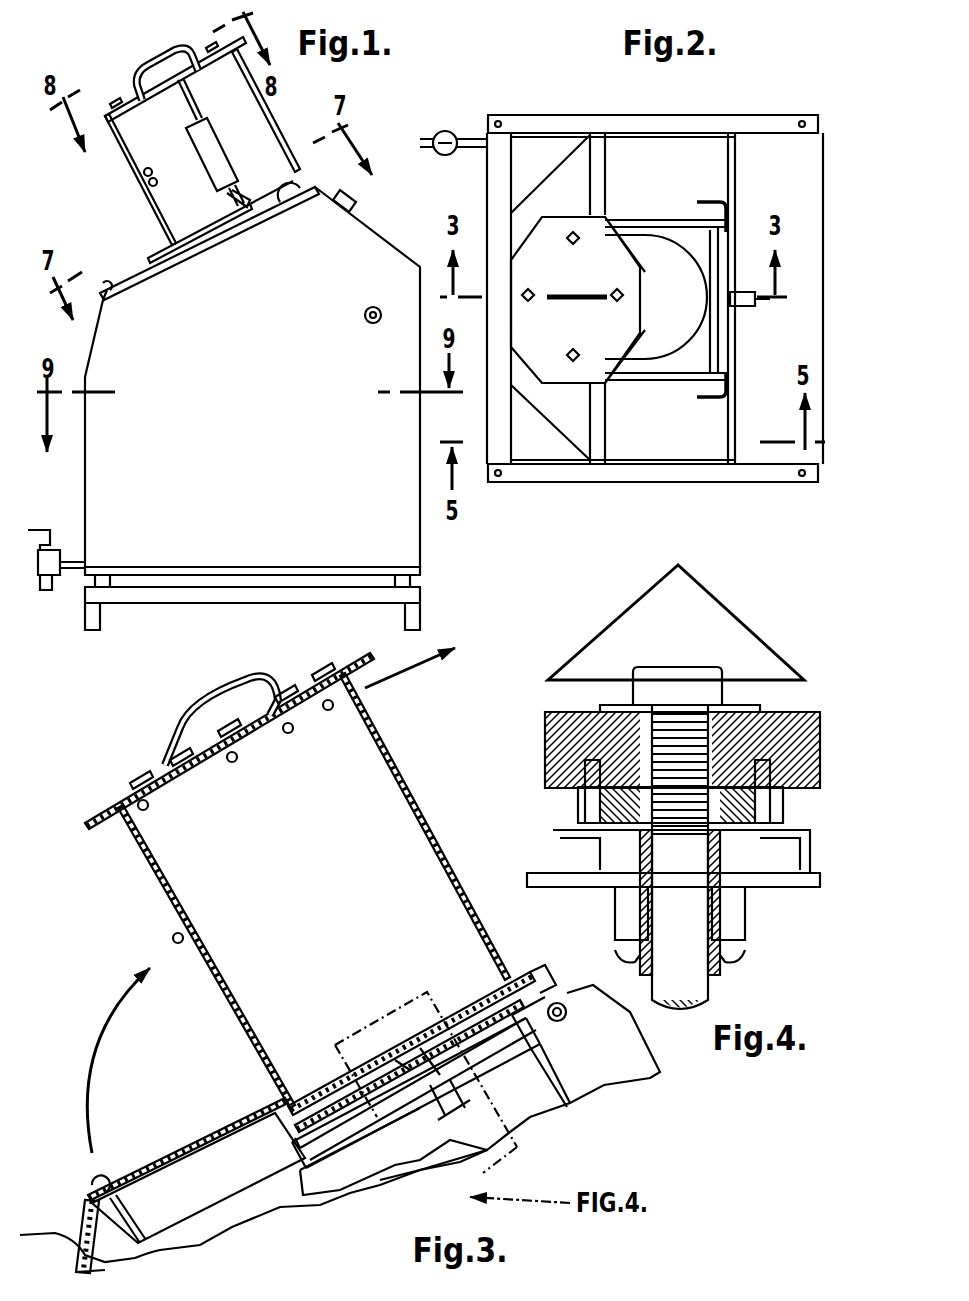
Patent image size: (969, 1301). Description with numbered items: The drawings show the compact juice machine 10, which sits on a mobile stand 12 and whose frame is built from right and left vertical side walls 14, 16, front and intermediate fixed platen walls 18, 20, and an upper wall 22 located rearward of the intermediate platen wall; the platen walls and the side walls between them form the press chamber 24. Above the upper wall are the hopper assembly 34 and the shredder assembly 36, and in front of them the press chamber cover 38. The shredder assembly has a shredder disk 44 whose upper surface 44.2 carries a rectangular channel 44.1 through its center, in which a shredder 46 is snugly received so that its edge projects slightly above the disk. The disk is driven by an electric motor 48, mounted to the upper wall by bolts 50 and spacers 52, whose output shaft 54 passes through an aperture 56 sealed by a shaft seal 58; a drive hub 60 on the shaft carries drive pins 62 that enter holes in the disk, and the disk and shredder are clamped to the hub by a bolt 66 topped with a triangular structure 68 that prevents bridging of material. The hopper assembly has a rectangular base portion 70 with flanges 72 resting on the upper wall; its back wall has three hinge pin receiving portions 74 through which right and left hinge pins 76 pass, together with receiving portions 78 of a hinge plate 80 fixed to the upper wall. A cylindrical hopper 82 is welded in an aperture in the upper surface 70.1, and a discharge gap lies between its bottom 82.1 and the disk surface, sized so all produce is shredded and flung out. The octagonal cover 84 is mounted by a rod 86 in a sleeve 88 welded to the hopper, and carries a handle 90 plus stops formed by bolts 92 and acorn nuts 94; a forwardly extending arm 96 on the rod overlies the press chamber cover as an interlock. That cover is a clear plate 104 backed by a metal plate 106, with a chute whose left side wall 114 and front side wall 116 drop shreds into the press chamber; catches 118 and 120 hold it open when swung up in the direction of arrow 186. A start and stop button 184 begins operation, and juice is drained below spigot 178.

In FIG. 1, the compact juice machine 10 is at (435, 537).
In FIG. 2, the compact juice machine 10 is at (780, 100).
In FIG. 1, the mobile stand 12 is at (433, 592).
In FIG. 1, the right vertical side wall 14 is at (253, 407).
In FIG. 2, the right vertical side wall 14 is at (745, 447).
In FIG. 2, the left vertical side wall 16 is at (758, 115).
In FIG. 3, the left vertical side wall 16 is at (602, 1090).
In FIG. 3, the front fixed platen wall 18 is at (72, 1245).
In FIG. 3, the intermediate fixed platen wall 20 is at (315, 1210).
In FIG. 2, the upper wall 22 is at (707, 443).
In FIG. 3, the upper wall 22 is at (598, 1040).
In FIG. 4, the upper wall 22 is at (553, 870).
In FIG. 3, the press chamber 24 is at (200, 1212).
In FIG. 1, the hopper assembly 34 is at (128, 147).
In FIG. 2, the hopper assembly 34 is at (642, 230).
In FIG. 3, the hopper assembly 34 is at (137, 891).
In FIG. 3, the shredder assembly 36 is at (396, 972).
In FIG. 1, the press chamber cover 38 is at (128, 264).
In FIG. 2, the press chamber cover 38 is at (553, 130).
In FIG. 3, the press chamber cover 38 is at (143, 1163).
In FIG. 3, the shredder disk 44 is at (315, 1097).
In FIG. 4, the channel 44.1 is at (600, 697).
In FIG. 4, the upper surface of shredder disk 44.2 is at (575, 712).
In FIG. 3, the shredder 46 is at (422, 1038).
In FIG. 4, the shredder 46 is at (735, 705).
In FIG. 3, the electric motor 48 is at (538, 1118).
In FIG. 3, the bolts 50 is at (505, 1035).
In FIG. 3, the spacers 52 is at (530, 1075).
In FIG. 4, the output shaft 54 is at (715, 995).
In FIG. 4, the aperture 56 is at (745, 900).
In FIG. 4, the shaft seal 58 is at (615, 918).
In FIG. 4, the drive hub 60 is at (580, 805).
In FIG. 4, the drive pins 62 is at (590, 770).
In FIG. 4, the bolt 66 is at (688, 667).
In FIG. 3, the triangular structure 68 is at (398, 985).
In FIG. 4, the triangular structure 68 is at (718, 600).
In FIG. 1, the rectangular base portion 70 is at (292, 177).
In FIG. 2, the rectangular base portion 70 is at (666, 230).
In FIG. 3, the rectangular base portion 70 is at (535, 985).
In FIG. 3, the upper surface of base portion 70.1 is at (480, 975).
In FIG. 2, the flanges 72 is at (622, 215).
In FIG. 2, the hinge pin receiving portions 74 is at (732, 357).
In FIG. 2, the hinge pins 76 is at (718, 175).
In FIG. 3, the hinge pin receiving portions of hinge plate 78 is at (568, 1000).
In FIG. 3, the hinge plate 80 is at (545, 1012).
In FIG. 1, the hopper 82 is at (258, 115).
In FIG. 2, the hopper 82 is at (689, 306).
In FIG. 3, the hopper 82 is at (375, 730).
In FIG. 3, the bottom of hopper 82.1 is at (305, 1095).
In FIG. 1, the cover 84 is at (133, 92).
In FIG. 2, the cover 84 is at (563, 220).
In FIG. 3, the cover 84 is at (90, 812).
In FIG. 1, the rod 86 is at (180, 116).
In FIG. 1, the sleeve 88 is at (198, 152).
In FIG. 1, the handle 90 is at (173, 48).
In FIG. 2, the handle 90 is at (573, 290).
In FIG. 3, the handle 90 is at (228, 682).
In FIG. 2, the bolts 92 is at (577, 350).
In FIG. 3, the bolts 92 is at (315, 675).
In FIG. 2, the acorn nuts 94 is at (620, 288).
In FIG. 3, the acorn nuts 94 is at (330, 715).
In FIG. 1, the forwardly extending arm 96 is at (172, 232).
In FIG. 1, the clear flat rectangular plate 104 is at (130, 290).
In FIG. 2, the clear flat rectangular plate 104 is at (527, 127).
In FIG. 3, the clear flat rectangular plate 104 is at (132, 1195).
In FIG. 2, the metal plate 106 is at (577, 412).
In FIG. 3, the metal plate 106 is at (232, 1128).
In FIG. 3, the left side wall of discharge chute 114 is at (222, 1173).
In FIG. 3, the front side wall of discharge chute 116 is at (135, 1250).
In FIG. 1, the catch 118 is at (107, 280).
In FIG. 3, the catch 118 is at (85, 1182).
In FIG. 1, the catch 120 is at (158, 182).
In FIG. 3, the catch 120 is at (170, 938).
In FIG. 1, the spigot 178 is at (60, 545).
In FIG. 1, the start and stop button 184 is at (368, 305).
In FIG. 3, the arrow 186 is at (100, 1020).